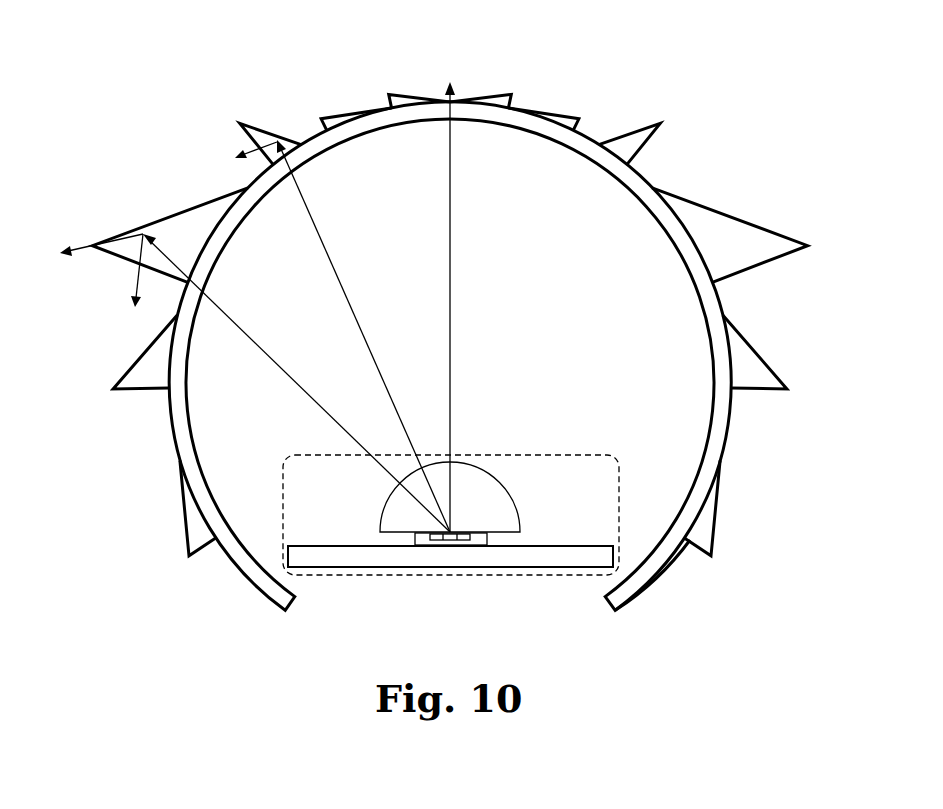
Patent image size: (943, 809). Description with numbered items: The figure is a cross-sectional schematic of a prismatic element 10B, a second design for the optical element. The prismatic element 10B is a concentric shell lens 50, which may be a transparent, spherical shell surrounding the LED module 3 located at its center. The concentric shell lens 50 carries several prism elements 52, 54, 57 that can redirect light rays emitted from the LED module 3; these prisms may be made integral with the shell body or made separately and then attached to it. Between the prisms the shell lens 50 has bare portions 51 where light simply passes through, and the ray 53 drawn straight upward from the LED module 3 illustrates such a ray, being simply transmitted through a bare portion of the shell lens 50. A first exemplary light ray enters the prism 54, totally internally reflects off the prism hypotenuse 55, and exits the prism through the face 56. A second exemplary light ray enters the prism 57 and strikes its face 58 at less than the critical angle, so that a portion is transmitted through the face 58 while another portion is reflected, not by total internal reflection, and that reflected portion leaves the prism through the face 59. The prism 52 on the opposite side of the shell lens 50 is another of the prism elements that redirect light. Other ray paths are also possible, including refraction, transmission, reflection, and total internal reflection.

The prismatic element 10B is at (105, 145).
The LED module 3 is at (402, 575).
The concentric shell lens 50 is at (178, 457).
The bare portions 51 is at (655, 565).
The prism element 52 is at (628, 145).
The ray 53 is at (458, 86).
The prism 54 is at (291, 136).
The prism hypotenuse 55 is at (267, 122).
The face 56 is at (248, 138).
The prism 57 is at (187, 240).
The face 58 is at (163, 227).
The face 59 is at (128, 267).